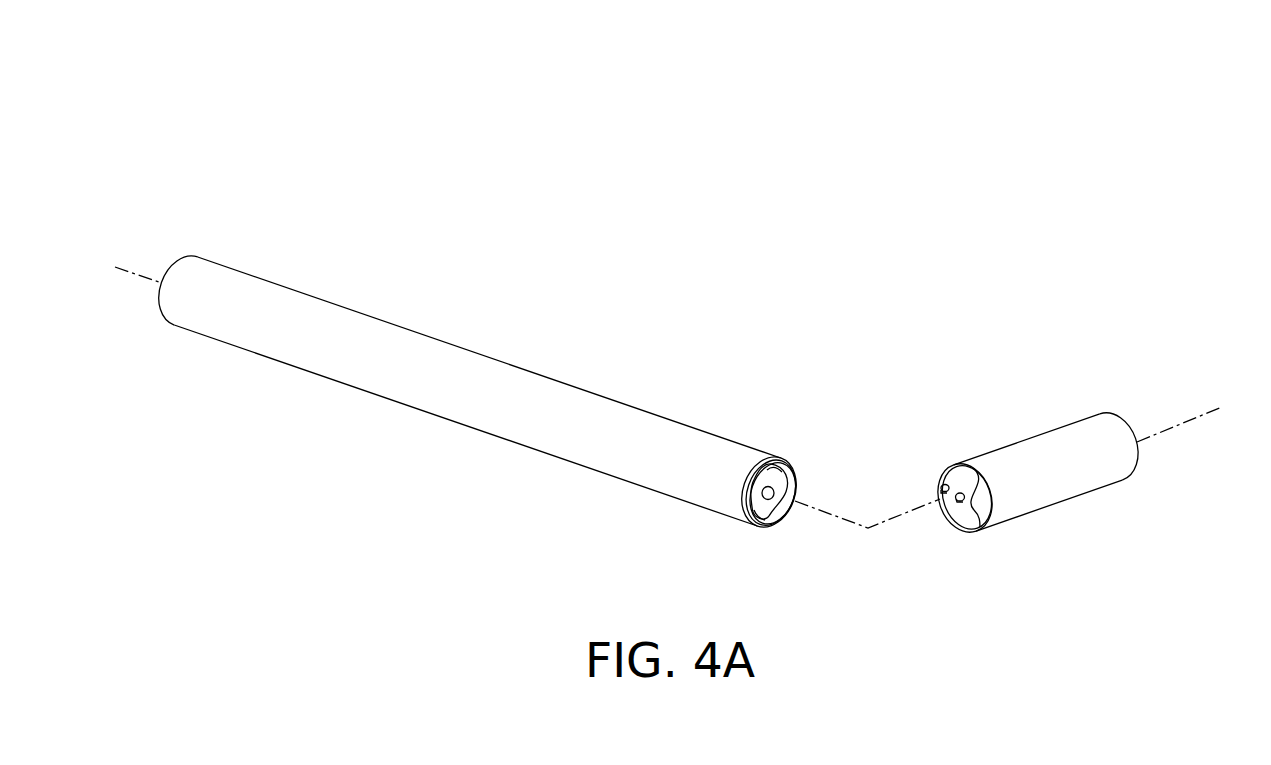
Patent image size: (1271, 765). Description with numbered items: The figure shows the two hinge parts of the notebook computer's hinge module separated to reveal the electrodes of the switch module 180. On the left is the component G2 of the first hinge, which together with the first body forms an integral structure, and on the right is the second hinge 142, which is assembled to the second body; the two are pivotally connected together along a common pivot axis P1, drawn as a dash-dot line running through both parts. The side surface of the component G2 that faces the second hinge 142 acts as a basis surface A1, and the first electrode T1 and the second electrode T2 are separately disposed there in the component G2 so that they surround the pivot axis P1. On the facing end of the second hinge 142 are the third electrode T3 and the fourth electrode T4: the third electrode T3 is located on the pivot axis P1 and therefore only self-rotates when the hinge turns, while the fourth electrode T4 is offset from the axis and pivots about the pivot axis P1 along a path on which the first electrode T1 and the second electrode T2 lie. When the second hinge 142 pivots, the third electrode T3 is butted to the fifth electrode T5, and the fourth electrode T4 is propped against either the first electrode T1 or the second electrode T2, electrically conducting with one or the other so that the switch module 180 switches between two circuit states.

The switch module 180 is at (185, 15).
The first electrode T1 is at (788, 463).
The second electrode T2 is at (763, 519).
The third electrode T3 is at (957, 500).
The fourth electrode T4 is at (937, 492).
The fifth electrode T5 is at (775, 500).
The component of the first hinge G2 is at (502, 303).
The second hinge 142 is at (1015, 370).
The basis surface A1 is at (783, 490).
The pivot axis P1 is at (1197, 416).